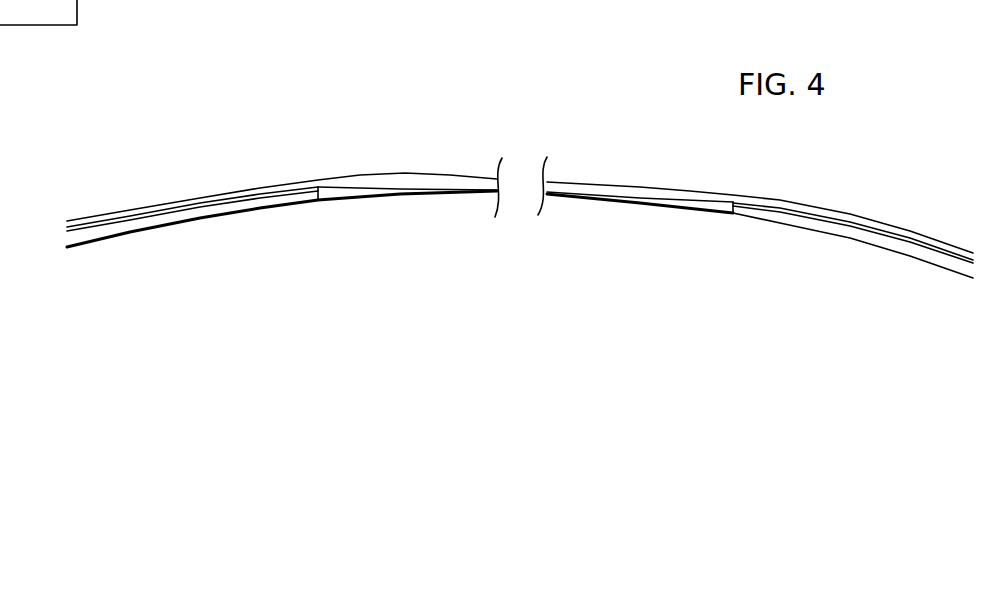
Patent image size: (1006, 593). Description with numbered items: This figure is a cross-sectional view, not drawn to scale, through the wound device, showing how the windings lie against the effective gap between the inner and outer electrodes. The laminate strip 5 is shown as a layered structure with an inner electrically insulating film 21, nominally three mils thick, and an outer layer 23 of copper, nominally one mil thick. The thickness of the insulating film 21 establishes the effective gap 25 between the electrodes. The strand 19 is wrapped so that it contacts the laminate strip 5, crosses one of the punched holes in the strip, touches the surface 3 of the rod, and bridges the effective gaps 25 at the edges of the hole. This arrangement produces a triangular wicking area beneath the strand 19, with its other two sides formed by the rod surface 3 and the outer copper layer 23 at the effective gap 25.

The surface of rod 3 is at (633, 204).
The laminate strip 5 is at (185, 205).
The strand 19 is at (404, 175).
The inner electrically insulating film 21 is at (118, 233).
The outer layer of copper 23 is at (157, 212).
The effective gap 25 is at (322, 200).